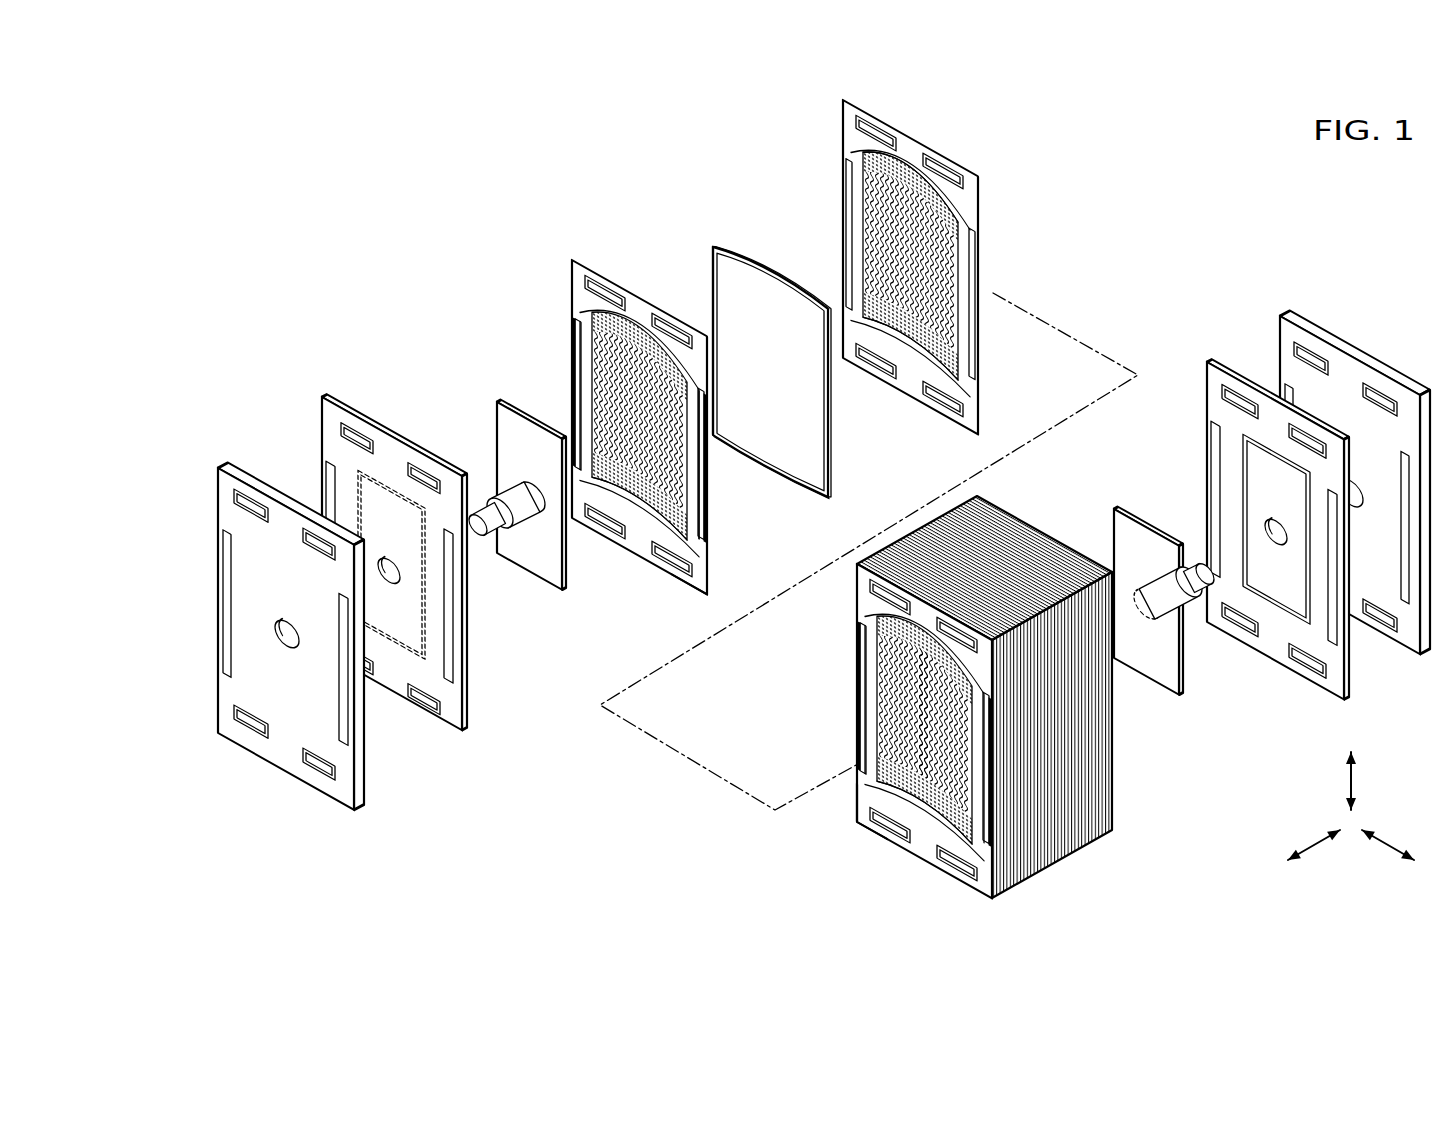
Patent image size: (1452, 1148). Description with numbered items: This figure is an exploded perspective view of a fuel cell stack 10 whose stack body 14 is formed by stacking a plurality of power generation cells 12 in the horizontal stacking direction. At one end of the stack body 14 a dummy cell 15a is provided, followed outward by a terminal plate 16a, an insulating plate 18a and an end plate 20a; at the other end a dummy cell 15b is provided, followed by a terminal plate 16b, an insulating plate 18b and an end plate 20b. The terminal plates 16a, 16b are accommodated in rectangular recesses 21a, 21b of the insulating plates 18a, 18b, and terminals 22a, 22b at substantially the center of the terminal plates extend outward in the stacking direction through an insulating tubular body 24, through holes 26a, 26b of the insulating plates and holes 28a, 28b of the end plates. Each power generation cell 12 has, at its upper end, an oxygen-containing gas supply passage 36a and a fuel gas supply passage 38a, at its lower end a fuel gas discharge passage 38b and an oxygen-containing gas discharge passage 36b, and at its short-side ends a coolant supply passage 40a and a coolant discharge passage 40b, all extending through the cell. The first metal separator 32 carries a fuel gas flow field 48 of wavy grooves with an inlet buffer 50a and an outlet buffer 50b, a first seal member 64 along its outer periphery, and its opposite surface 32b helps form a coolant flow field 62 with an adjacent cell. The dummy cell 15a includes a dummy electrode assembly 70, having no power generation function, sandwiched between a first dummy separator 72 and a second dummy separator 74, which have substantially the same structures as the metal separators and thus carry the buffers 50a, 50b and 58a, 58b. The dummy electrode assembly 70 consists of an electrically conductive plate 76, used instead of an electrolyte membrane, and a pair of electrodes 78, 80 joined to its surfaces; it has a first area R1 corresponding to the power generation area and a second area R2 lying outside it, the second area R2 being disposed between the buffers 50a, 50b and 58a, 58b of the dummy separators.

The fuel cell stack 10 is at (786, 502).
The power generation cell 12 is at (1086, 853).
The stack body 14 is at (1029, 702).
The dummy cell 15a is at (782, 503).
The dummy cell 15b is at (1019, 749).
The terminal plate 16a is at (494, 432).
The terminal plate 16b is at (1118, 530).
The insulating plate 18a is at (353, 551).
The insulating plate 18b is at (1243, 509).
The end plate 20a is at (253, 633).
The end plate 20b is at (1323, 465).
The rectangular recess 21a is at (425, 516).
The rectangular recess 21b is at (1246, 437).
The terminal 22a is at (484, 532).
The terminal 22b is at (1202, 570).
The insulating tubular body 24 is at (841, 554).
The through hole 26a is at (392, 586).
The through hole 26b is at (1275, 520).
The hole 28a is at (294, 630).
The hole 28b is at (1357, 488).
The first metal separator 32 is at (855, 831).
The surface 32b is at (701, 595).
The oxygen-containing gas supply passage 36a is at (252, 502).
The oxygen-containing gas discharge passage 36b is at (325, 768).
The fuel gas supply passage 38a is at (328, 542).
The fuel gas discharge passage 38b is at (244, 717).
The coolant supply passage 40a is at (226, 570).
The coolant discharge passage 40b is at (344, 694).
The fuel gas flow field 48 is at (898, 698).
The inlet buffer 50a is at (592, 322).
The outlet buffer 50b is at (640, 524).
The inlet buffer 58a is at (913, 185).
The outlet buffer 58b is at (918, 355).
The coolant flow field 62 is at (893, 684).
The first seal member 64 is at (712, 531).
The dummy electrode assembly 70 is at (772, 331).
The first dummy separator 72 is at (677, 391).
The second dummy separator 74 is at (855, 503).
The plate 76 is at (712, 277).
The electrode 78 is at (738, 282).
The electrode 80 is at (803, 318).
The first area R1 is at (800, 442).
The second area R2 is at (770, 283).